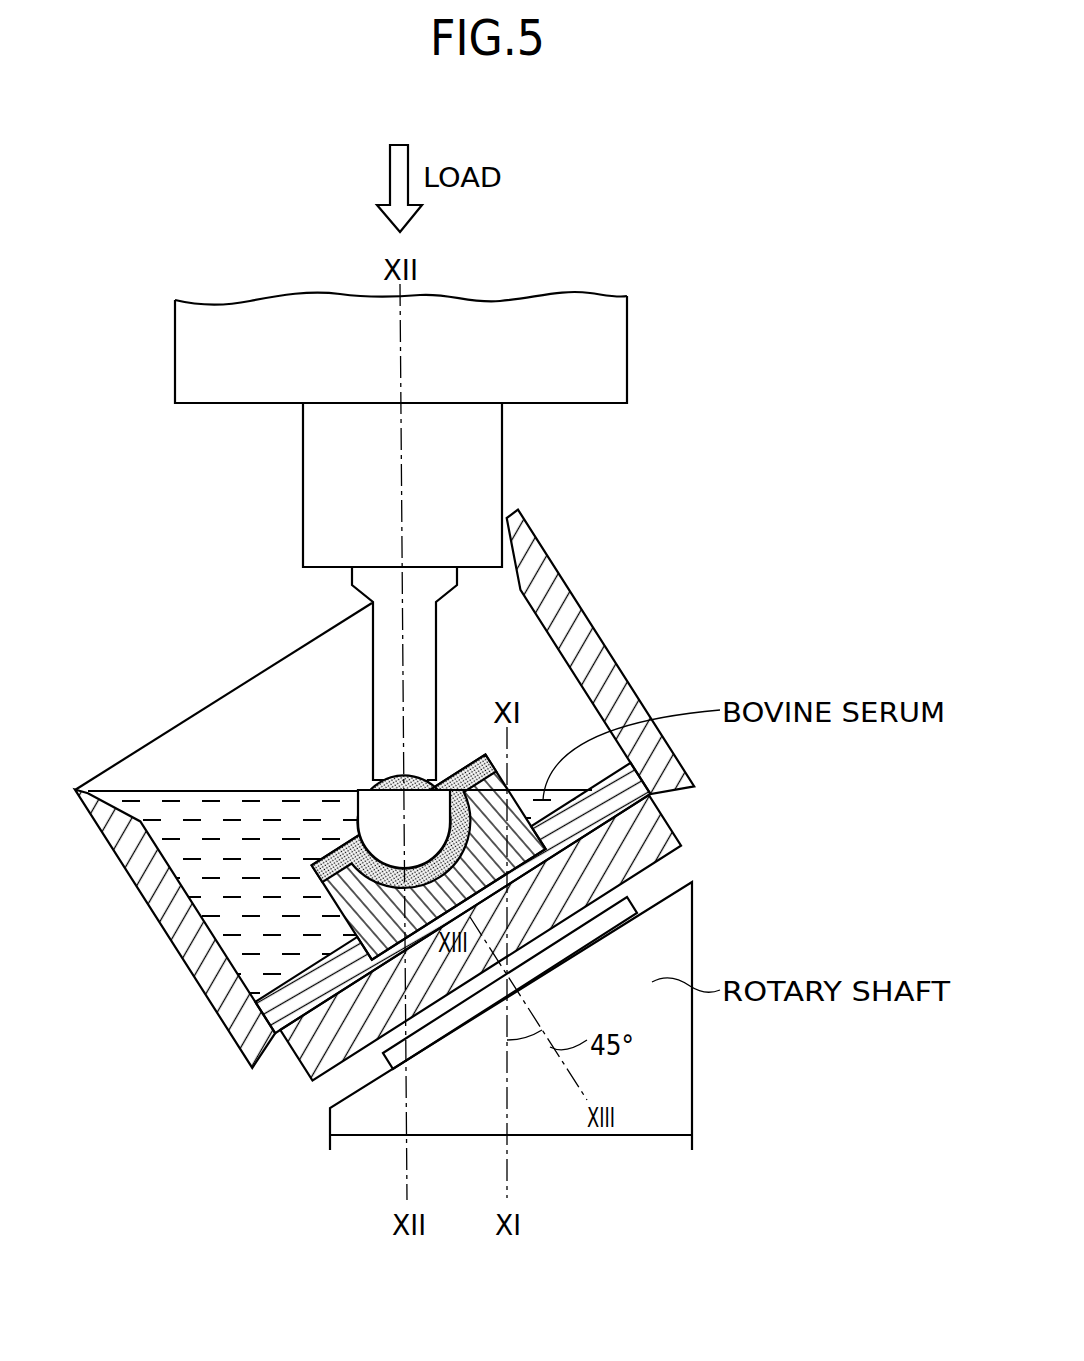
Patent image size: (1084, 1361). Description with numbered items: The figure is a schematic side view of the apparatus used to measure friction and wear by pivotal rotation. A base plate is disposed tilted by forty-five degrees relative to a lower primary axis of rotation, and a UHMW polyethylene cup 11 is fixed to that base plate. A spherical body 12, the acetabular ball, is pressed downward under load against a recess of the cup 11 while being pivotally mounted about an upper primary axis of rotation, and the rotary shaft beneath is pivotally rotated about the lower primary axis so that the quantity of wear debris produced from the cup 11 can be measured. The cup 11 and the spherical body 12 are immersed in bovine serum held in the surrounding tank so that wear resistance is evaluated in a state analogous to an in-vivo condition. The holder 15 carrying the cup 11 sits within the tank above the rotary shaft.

The UHMW polyethylene cup 11 is at (352, 880).
The spherical body (acetabular ball) 12 is at (367, 812).
The holder 15 is at (400, 925).